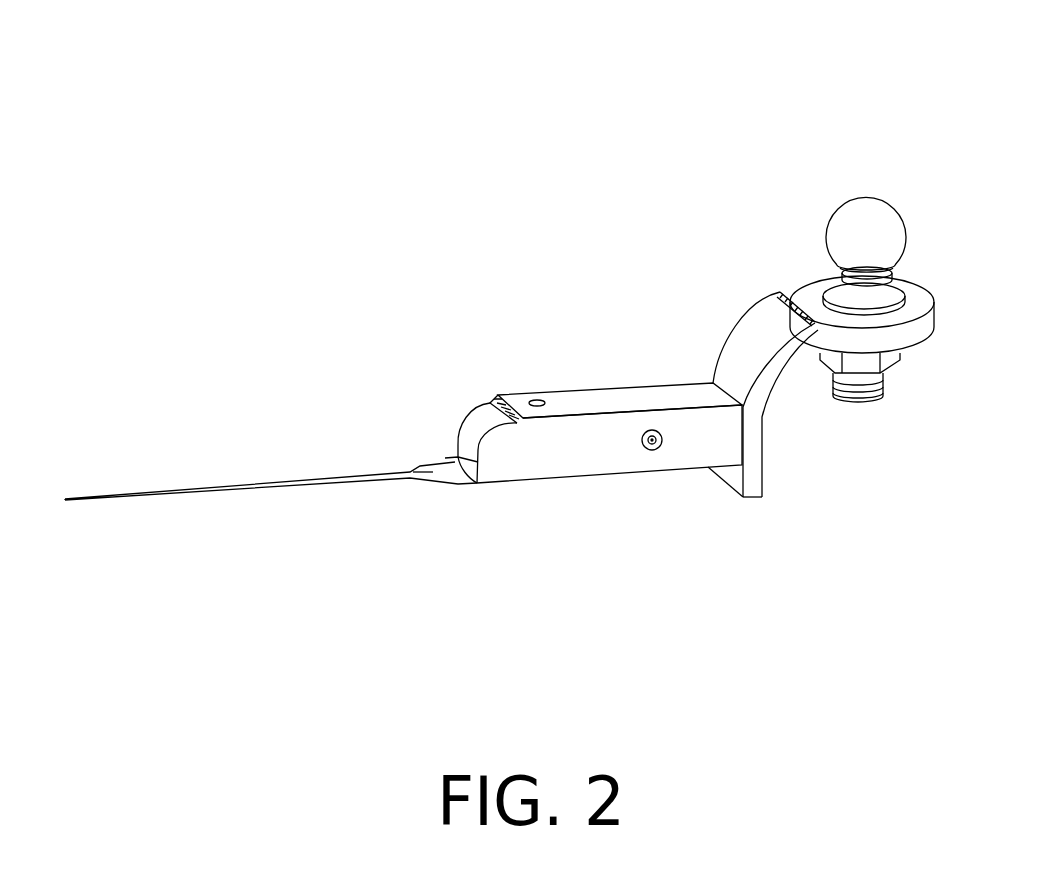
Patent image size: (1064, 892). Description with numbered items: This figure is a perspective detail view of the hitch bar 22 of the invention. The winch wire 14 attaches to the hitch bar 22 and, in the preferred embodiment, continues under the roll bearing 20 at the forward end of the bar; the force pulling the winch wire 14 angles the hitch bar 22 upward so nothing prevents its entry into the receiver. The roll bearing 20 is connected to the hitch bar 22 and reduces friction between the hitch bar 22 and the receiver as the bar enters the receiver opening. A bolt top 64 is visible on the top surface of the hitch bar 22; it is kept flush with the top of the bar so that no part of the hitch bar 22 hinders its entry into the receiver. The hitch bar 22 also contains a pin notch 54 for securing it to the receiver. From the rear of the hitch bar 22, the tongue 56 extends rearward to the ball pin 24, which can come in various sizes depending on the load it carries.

The winch wire 14 is at (271, 560).
The roll bearing 20 is at (516, 393).
The hitch bar 22 is at (666, 313).
The ball pin 24 is at (916, 262).
The pin notch 54 is at (752, 254).
The tongue 56 is at (875, 435).
The bolt top 64 is at (456, 276).